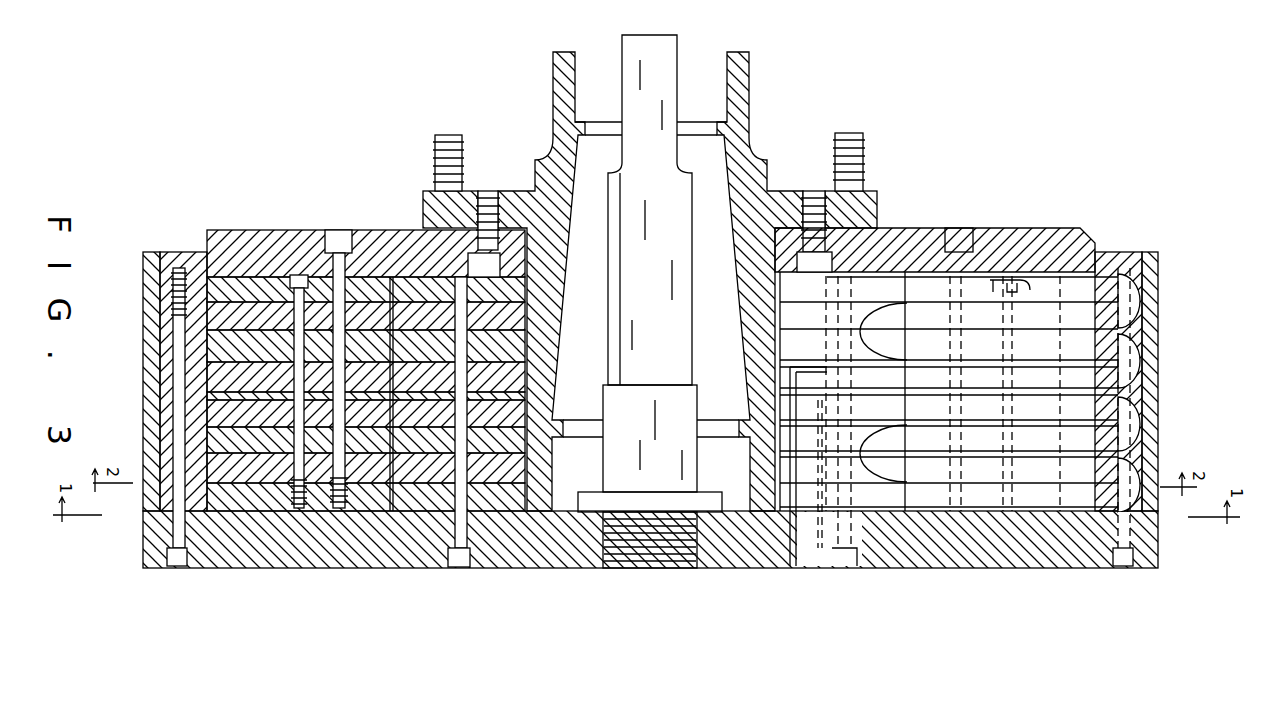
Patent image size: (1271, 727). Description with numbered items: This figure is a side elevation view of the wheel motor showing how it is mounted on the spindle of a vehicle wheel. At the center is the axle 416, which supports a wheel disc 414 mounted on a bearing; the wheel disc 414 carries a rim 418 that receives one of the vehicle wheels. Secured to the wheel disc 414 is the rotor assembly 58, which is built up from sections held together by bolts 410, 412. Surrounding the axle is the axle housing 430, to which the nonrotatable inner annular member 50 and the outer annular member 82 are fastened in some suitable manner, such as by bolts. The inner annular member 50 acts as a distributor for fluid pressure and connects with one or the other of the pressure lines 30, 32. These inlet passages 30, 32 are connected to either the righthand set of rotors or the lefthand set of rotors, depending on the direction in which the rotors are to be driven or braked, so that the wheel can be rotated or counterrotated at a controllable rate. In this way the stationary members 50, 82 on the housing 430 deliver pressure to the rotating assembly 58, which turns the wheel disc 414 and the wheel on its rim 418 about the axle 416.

The pressure line 30 is at (820, 552).
The pressure line 32 is at (860, 555).
The inner annular member 50 is at (420, 511).
The rotor assembly 58 is at (250, 500).
The outer annular member 82 is at (190, 254).
The bolt 410 is at (296, 283).
The bolt 412 is at (1030, 278).
The wheel disc 414 is at (548, 568).
The axle 416 is at (633, 412).
The rim 418 is at (143, 280).
The axle housing 430 is at (770, 184).